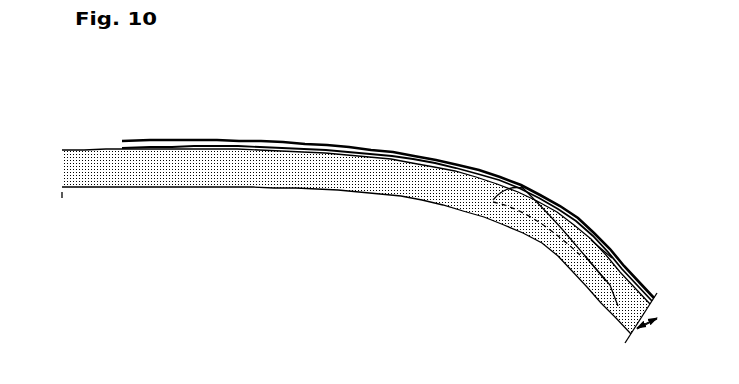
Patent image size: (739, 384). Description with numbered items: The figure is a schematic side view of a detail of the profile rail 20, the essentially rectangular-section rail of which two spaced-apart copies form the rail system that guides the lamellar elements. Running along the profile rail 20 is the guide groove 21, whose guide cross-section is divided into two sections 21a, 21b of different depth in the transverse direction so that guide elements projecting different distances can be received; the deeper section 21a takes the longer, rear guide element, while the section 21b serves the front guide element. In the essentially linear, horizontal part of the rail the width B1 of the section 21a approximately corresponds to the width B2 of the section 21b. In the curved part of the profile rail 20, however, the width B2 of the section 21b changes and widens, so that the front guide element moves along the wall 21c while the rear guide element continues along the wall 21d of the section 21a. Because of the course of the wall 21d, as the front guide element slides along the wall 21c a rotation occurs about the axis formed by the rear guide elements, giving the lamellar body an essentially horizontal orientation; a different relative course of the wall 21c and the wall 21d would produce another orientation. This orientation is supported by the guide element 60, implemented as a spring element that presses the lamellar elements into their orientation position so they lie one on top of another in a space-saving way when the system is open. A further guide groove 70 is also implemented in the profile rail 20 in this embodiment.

The guide groove 21 is at (97, 142).
The profile rail 20 is at (97, 172).
The further guide groove 70 is at (348, 200).
The section of the guide groove 21a is at (328, 148).
The section of the guide groove 21b is at (560, 227).
The wall 21c is at (447, 167).
The wall 21d is at (612, 257).
The guide element 60 is at (518, 210).
The width of section 21a B1 is at (656, 312).
The width of section 21b B2 is at (657, 333).